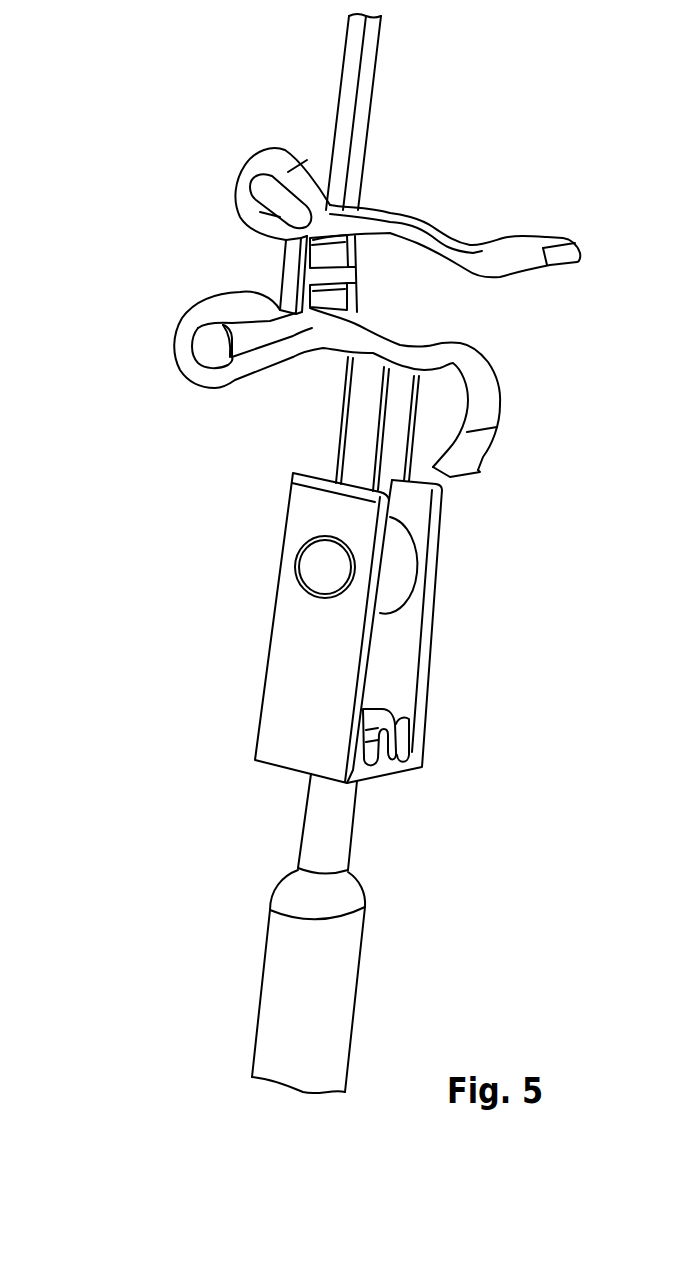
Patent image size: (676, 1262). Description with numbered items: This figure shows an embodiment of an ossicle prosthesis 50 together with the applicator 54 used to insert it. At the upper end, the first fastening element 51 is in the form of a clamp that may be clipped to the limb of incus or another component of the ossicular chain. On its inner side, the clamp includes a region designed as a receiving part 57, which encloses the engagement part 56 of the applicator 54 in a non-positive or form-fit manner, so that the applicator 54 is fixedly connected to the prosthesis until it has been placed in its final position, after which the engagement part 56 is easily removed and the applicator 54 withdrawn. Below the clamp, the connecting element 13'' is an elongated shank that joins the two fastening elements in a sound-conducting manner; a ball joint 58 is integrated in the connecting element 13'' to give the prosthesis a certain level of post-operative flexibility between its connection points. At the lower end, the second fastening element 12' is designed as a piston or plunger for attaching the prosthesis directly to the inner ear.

The ossicle prosthesis 50 is at (305, 308).
The first fastening element 51 is at (185, 368).
The applicator 54 is at (342, 66).
The engagement part 56 is at (290, 260).
The receiving part 57 is at (270, 284).
The ball joint 58 is at (355, 627).
The connecting element 13'' is at (338, 615).
The second fastening element 12' is at (345, 981).